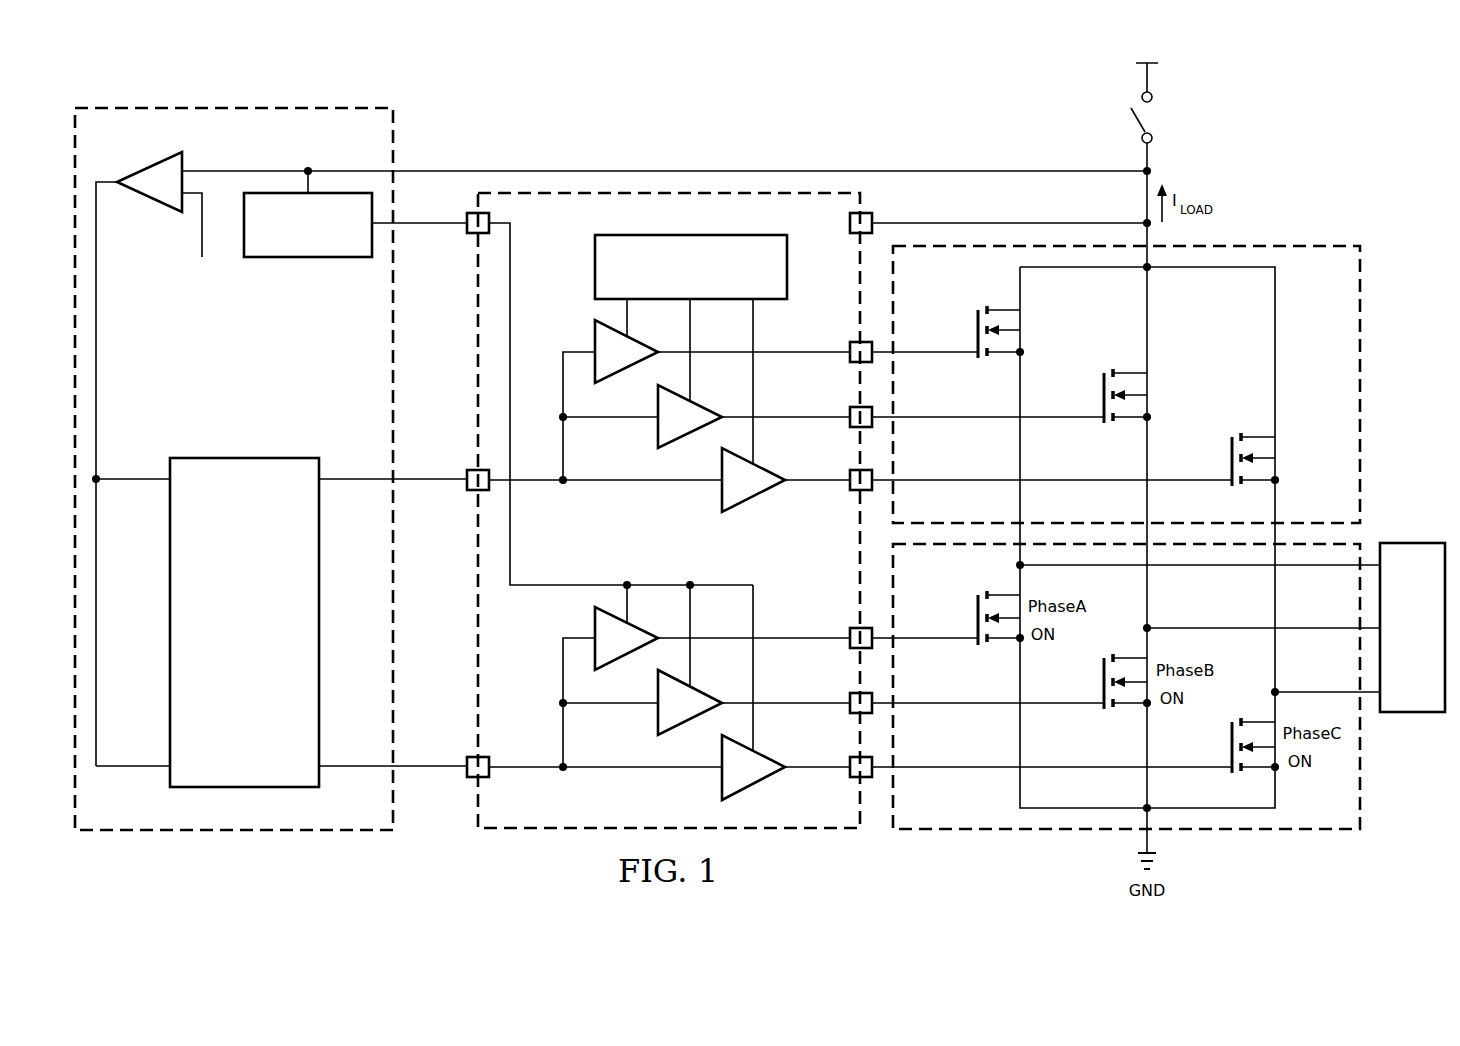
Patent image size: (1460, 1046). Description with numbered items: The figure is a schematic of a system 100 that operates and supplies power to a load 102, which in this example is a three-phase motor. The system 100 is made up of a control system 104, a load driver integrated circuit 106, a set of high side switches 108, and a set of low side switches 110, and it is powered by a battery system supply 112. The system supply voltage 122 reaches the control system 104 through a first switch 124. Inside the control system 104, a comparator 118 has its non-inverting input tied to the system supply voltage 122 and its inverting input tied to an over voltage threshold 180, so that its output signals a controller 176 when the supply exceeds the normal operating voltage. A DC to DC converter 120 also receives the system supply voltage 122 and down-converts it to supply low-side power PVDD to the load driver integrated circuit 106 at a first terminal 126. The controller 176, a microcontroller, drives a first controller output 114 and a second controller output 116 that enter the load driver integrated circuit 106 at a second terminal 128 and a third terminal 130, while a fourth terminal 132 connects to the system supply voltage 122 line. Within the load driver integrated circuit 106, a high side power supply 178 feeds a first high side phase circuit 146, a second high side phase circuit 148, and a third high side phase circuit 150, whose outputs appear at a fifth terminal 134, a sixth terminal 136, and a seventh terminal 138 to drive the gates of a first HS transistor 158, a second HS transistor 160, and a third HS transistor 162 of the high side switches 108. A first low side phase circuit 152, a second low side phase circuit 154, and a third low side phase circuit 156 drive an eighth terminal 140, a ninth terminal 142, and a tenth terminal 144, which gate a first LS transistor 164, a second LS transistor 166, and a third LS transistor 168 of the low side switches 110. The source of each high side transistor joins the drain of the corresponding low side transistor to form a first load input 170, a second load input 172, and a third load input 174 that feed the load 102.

The system 100 is at (590, 96).
The load 102 is at (1410, 714).
The control system 104 is at (182, 838).
The load driver integrated circuit 106 is at (578, 840).
The high side switches 108 is at (1368, 334).
The low side switches 110 is at (1208, 840).
The system supply 112 is at (1160, 63).
The first controller output 114 is at (356, 482).
The second controller output 116 is at (356, 765).
The comparator 118 is at (150, 162).
The DC to DC converter 120 is at (300, 259).
The system supply voltage 122 is at (978, 170).
The first switch 124 is at (1150, 122).
The first terminal 126 is at (466, 233).
The second terminal 128 is at (466, 490).
The third terminal 130 is at (466, 777).
The fourth terminal 132 is at (874, 223).
The fifth terminal 134 is at (848, 360).
The sixth terminal 136 is at (848, 425).
The seventh terminal 138 is at (848, 488).
The eighth terminal 140 is at (848, 646).
The ninth terminal 142 is at (848, 711).
The tenth terminal 144 is at (848, 775).
The first high side phase circuit 146 is at (594, 338).
The second high side phase circuit 148 is at (658, 428).
The third high side phase circuit 150 is at (722, 492).
The first low side phase circuit 152 is at (594, 624).
The second low side phase circuit 154 is at (658, 715).
The third low side phase circuit 156 is at (722, 780).
The first HS transistor 158 is at (975, 321).
The second HS transistor 160 is at (1102, 385).
The third HS transistor 162 is at (1230, 450).
The first LS transistor 164 is at (975, 608).
The second LS transistor 166 is at (1102, 671).
The third LS transistor 168 is at (1230, 735).
The first load input 170 is at (1218, 568).
The second load input 172 is at (1318, 626).
The third load input 174 is at (1318, 690).
The controller 176 is at (244, 622).
The high side power supply 178 is at (594, 270).
The over voltage threshold 180 is at (202, 226).